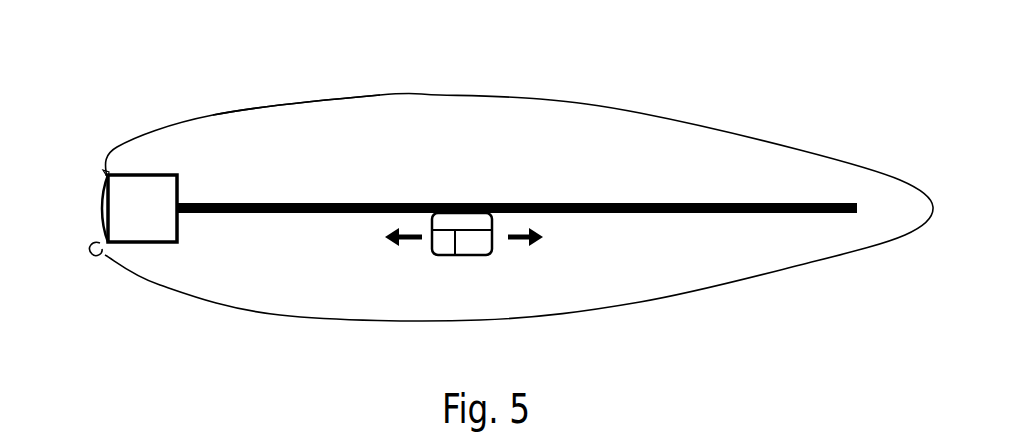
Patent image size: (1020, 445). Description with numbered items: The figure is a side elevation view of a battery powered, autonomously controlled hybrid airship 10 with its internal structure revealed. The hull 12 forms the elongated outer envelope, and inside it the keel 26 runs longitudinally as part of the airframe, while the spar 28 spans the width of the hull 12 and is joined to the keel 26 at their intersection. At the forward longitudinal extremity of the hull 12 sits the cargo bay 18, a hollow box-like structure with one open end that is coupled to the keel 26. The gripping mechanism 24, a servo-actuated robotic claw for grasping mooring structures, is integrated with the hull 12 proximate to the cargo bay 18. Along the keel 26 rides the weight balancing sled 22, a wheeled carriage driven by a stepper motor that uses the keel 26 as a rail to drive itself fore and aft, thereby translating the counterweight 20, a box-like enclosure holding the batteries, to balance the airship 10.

The hybrid airship 10 is at (675, 90).
The hull 12 is at (213, 122).
The cargo bay 18 is at (123, 177).
The counterweight 20 is at (480, 255).
The weight balancing sled 22 is at (453, 255).
The gripping mechanism 24 is at (89, 251).
The keel 26 is at (687, 213).
The spar 28 is at (100, 208).